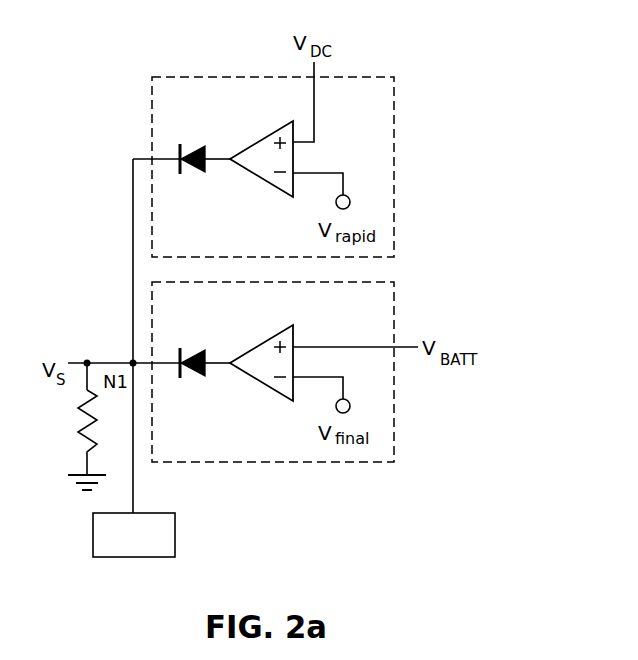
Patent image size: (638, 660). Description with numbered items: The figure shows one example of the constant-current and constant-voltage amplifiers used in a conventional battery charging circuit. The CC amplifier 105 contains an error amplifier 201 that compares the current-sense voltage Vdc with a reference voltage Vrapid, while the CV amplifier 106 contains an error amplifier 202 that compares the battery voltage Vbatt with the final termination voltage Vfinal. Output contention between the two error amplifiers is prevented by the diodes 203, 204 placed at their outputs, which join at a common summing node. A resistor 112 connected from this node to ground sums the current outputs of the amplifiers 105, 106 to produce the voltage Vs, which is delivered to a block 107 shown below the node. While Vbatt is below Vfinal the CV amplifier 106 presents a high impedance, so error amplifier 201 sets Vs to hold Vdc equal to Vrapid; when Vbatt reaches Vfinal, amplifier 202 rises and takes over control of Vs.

The CC amplifier 105 is at (183, 70).
The CV amplifier 106 is at (347, 480).
The control circuit 107 is at (118, 548).
The resistor 112 is at (80, 430).
The error amplifier 201 is at (272, 138).
The error amplifier 202 is at (268, 337).
The diode 203 is at (203, 152).
The diode 204 is at (200, 348).